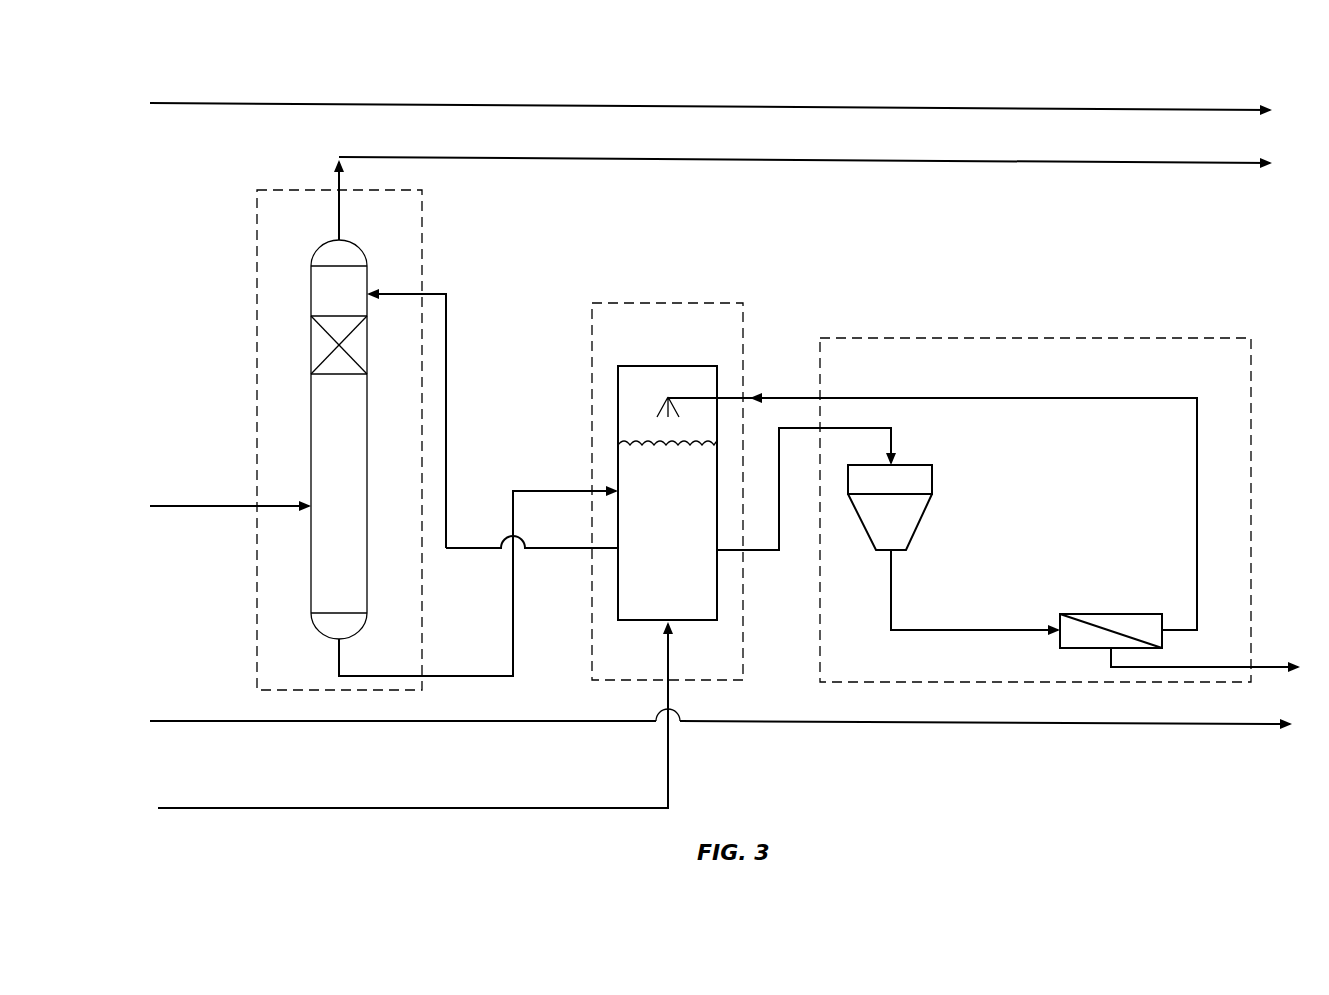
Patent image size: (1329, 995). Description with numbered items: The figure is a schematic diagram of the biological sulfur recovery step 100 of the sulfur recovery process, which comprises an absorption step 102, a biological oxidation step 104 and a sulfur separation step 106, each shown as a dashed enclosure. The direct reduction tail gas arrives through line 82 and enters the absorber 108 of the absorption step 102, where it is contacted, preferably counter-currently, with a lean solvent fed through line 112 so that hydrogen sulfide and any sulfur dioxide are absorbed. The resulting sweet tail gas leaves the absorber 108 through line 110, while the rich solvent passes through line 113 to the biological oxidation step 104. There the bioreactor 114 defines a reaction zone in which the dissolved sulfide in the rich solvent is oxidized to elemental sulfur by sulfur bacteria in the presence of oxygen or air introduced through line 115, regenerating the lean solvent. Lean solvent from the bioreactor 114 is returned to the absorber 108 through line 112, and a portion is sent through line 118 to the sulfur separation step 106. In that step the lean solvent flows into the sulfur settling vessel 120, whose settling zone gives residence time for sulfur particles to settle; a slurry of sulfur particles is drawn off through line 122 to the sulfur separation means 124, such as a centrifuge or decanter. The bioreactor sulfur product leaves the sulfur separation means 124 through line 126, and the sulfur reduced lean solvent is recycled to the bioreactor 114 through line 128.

The biological sulfur recovery step 100 is at (882, 82).
The absorption step 102 is at (283, 190).
The biological oxidation step 104 is at (602, 302).
The sulfur separation step 106 is at (1117, 338).
The absorber 108 is at (311, 294).
The line 110 is at (590, 157).
The line 112 is at (446, 398).
The line 113 is at (435, 676).
The bioreactor 114 is at (657, 366).
The line 115 is at (242, 808).
The line 118 is at (752, 552).
The sulfur settling vessel 120 is at (934, 478).
The line 122 is at (965, 630).
The sulfur separation means 124 is at (1120, 614).
The line 126 is at (1242, 667).
The line 128 is at (1066, 398).
The line 82 is at (207, 505).